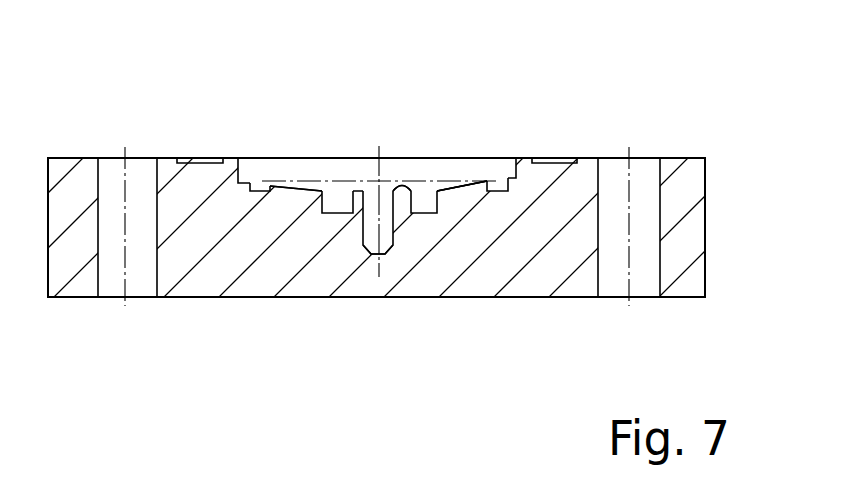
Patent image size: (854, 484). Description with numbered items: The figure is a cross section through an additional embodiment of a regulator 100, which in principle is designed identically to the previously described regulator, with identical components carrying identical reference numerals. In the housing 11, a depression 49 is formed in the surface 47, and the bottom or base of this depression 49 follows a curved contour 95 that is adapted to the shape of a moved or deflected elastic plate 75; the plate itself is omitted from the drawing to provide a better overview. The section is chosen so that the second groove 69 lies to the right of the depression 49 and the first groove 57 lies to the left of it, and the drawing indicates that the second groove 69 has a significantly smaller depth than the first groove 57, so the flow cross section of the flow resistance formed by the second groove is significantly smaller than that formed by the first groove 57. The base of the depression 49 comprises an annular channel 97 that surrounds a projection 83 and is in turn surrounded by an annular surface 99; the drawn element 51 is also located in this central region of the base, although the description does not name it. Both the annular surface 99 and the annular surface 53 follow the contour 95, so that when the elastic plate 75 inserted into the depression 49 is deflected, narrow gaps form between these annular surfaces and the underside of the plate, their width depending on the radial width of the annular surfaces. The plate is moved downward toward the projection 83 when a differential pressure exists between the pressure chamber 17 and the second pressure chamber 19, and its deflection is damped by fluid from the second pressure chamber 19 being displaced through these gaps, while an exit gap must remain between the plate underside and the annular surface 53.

The housing 11 is at (684, 200).
The regulator 100 is at (86, 124).
The surface 47 is at (682, 152).
The first groove 57 is at (195, 150).
The second groove 69 is at (558, 150).
The pressure chamber 17 is at (253, 168).
The elastic plate 75 is at (298, 180).
The depression 49 is at (418, 166).
The second pressure chamber 19 is at (461, 207).
The annular surface 99 is at (268, 188).
The curved contour 95 is at (329, 210).
The annular channel 97 is at (429, 214).
The centering pin 51 is at (375, 253).
The annular surface 53 is at (408, 215).
The projection 83 is at (362, 246).